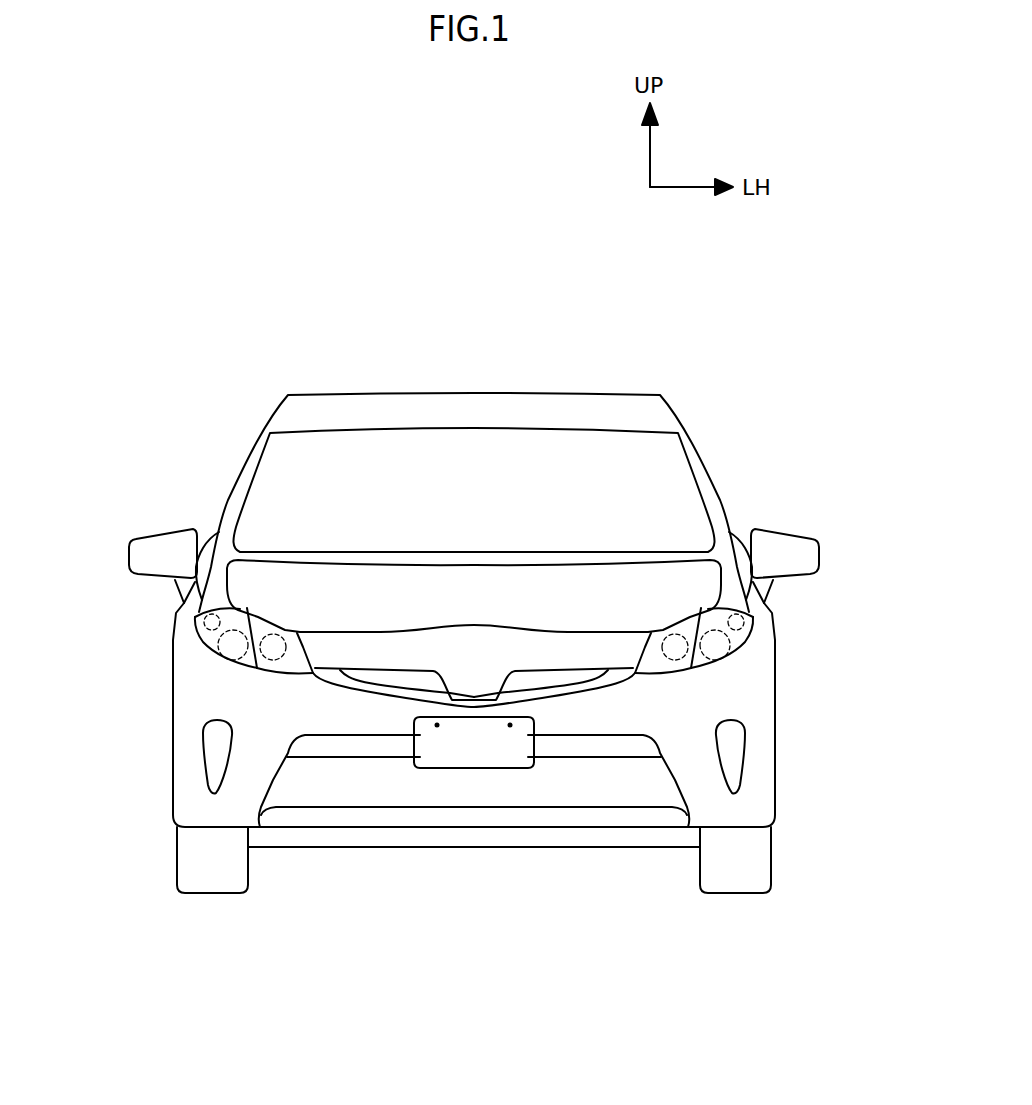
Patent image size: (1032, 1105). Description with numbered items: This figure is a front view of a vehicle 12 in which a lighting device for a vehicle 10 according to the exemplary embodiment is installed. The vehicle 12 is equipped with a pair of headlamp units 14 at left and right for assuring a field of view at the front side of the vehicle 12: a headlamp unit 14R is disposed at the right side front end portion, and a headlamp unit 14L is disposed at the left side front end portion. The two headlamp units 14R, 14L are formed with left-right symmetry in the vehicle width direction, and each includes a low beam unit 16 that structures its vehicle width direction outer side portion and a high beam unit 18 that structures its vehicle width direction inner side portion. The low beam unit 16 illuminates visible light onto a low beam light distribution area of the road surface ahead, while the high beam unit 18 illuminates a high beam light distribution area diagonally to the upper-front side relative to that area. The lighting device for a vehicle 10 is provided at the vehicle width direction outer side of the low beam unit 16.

The lighting device for a vehicle 10 is at (472, 707).
The vehicle 12 is at (722, 383).
The headlamp units 14 is at (472, 580).
The headlamp unit 14R is at (193, 630).
The headlamp unit 14L is at (753, 628).
The low beam unit 16 is at (220, 667).
The high beam unit 18 is at (270, 676).